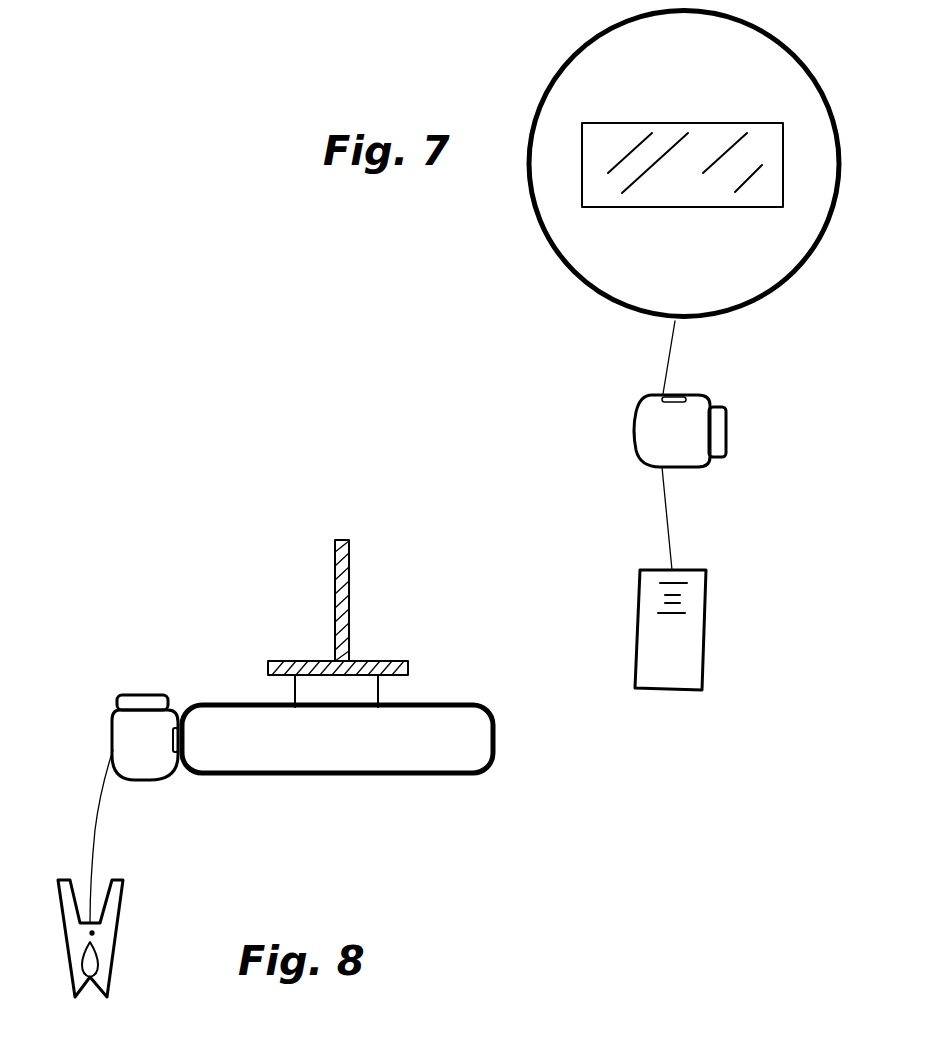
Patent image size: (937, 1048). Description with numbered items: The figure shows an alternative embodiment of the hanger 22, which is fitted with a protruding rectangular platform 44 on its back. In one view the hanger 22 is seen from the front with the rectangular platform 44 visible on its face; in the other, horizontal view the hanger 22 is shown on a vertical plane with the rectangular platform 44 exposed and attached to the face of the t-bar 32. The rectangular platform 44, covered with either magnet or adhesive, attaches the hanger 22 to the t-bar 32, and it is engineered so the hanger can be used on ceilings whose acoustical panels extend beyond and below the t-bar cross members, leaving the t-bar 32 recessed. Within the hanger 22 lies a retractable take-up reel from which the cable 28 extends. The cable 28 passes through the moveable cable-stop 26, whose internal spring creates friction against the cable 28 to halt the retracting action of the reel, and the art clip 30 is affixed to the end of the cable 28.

In FIG. 7, the hanger 22 is at (817, 243).
In FIG. 8, the hanger 22 is at (495, 745).
In FIG. 7, the cable-stop 26 is at (727, 420).
In FIG. 8, the cable-stop 26 is at (112, 717).
In FIG. 7, the cable 28 is at (672, 512).
In FIG. 8, the cable 28 is at (93, 840).
In FIG. 7, the art clip 30 is at (706, 618).
In FIG. 8, the art clip 30 is at (118, 932).
In FIG. 8, the t-bar 32 is at (350, 588).
In FIG. 7, the rectangular platform 44 is at (784, 170).
In FIG. 8, the rectangular platform 44 is at (379, 690).